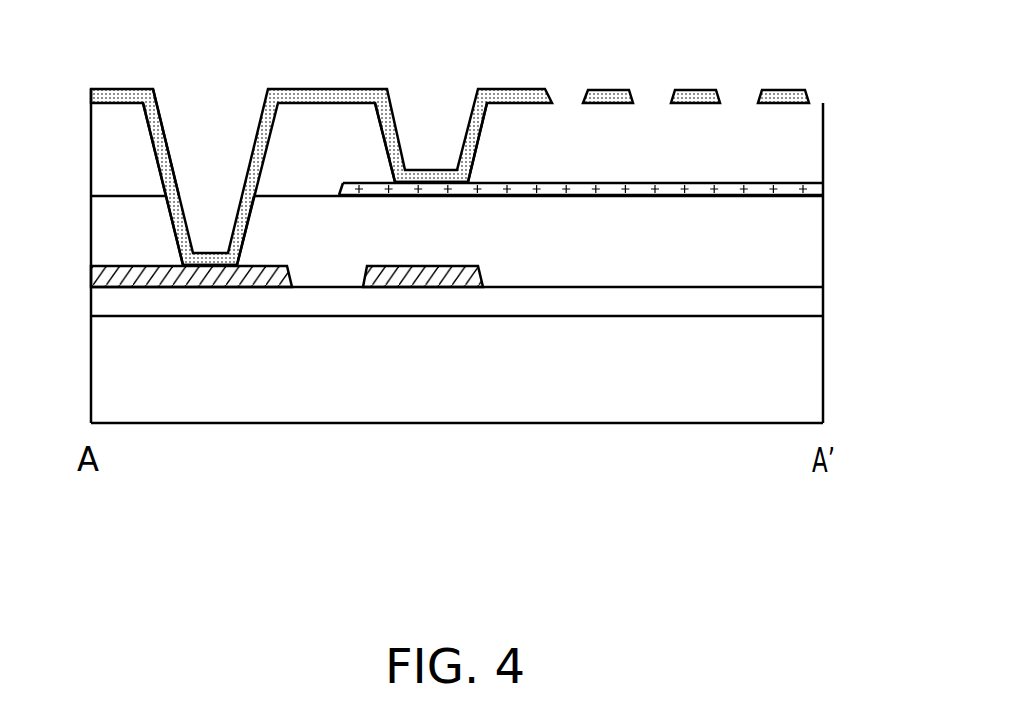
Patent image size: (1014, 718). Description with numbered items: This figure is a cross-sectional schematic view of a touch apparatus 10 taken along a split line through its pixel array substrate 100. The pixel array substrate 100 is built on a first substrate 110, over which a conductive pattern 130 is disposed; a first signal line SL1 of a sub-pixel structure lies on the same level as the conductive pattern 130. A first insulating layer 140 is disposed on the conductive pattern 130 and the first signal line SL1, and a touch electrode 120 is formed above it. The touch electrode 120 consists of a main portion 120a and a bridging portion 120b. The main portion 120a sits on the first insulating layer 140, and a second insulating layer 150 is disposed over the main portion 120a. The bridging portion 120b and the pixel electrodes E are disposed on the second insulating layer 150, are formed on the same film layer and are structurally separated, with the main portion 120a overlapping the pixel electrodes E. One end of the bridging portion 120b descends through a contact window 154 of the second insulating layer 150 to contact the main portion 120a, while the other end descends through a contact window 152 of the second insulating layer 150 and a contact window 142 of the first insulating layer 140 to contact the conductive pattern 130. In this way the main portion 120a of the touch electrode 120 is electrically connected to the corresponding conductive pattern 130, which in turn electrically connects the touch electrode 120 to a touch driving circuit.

The pixel array substrate 100 is at (467, 303).
The touch apparatus 10 is at (465, 303).
The first substrate 110 is at (815, 371).
The touch electrode 120 is at (468, 303).
The main portion 120a is at (815, 190).
The bridging portion 120b is at (322, 89).
The conductive pattern 130 is at (250, 375).
The first signal line SL1 is at (418, 288).
The first insulating layer 140 is at (105, 232).
The contact window 142 is at (183, 221).
The second insulating layer 150 is at (105, 151).
The contact window 152 is at (160, 127).
The contact window 154 is at (392, 128).
The pixel electrode E is at (788, 90).